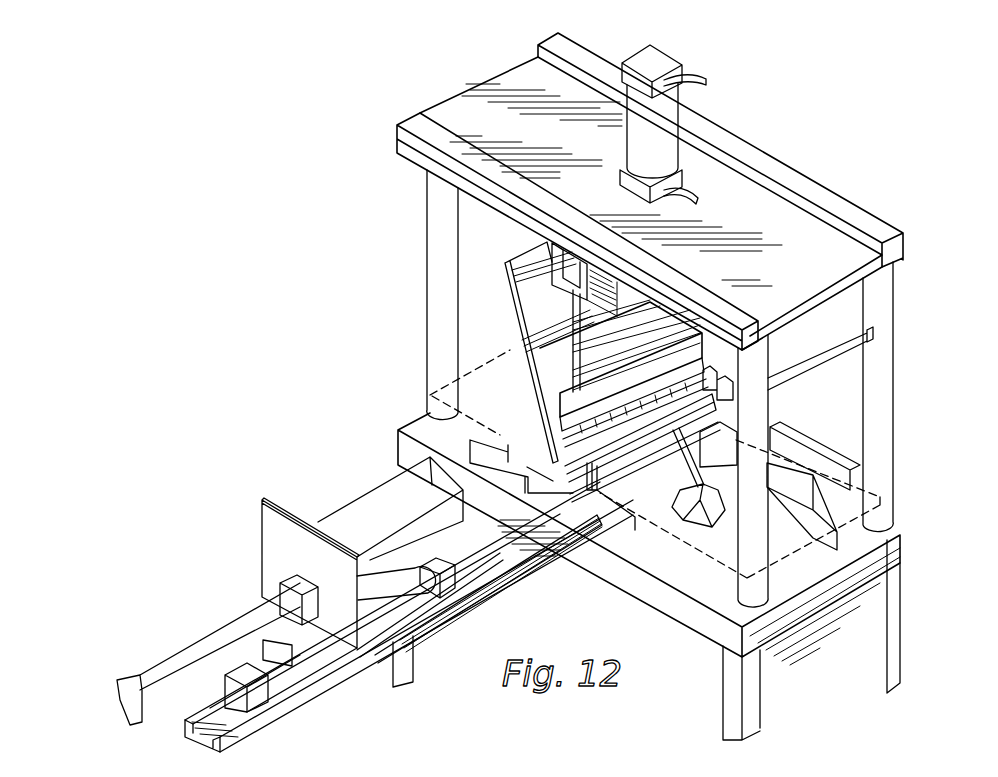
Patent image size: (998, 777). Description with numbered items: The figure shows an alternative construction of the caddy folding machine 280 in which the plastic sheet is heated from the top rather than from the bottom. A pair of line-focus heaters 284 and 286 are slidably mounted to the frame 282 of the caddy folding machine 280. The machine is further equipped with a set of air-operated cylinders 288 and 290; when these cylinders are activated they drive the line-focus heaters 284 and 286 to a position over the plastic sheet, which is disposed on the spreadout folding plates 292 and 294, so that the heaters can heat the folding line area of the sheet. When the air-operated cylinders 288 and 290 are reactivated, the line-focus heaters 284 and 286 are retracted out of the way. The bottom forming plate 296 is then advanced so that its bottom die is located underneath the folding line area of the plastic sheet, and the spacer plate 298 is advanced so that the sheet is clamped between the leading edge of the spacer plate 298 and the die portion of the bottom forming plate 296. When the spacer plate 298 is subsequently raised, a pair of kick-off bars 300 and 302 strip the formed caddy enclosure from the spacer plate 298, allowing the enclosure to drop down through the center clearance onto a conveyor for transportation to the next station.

The caddy folding machine 280 is at (840, 691).
The frame 282 is at (875, 575).
The line-focus heater 284 is at (387, 487).
The line-focus heater 286 is at (452, 543).
The air-operated cylinder 288 is at (226, 636).
The air-operated cylinder 290 is at (300, 665).
The spreadout folding plate 292 is at (460, 313).
The spreadout folding plate 294 is at (780, 388).
The bottom forming plate 296 is at (742, 437).
The spacer plate 298 is at (534, 362).
The kick-off bar 300 is at (546, 254).
The kick-off bar 302 is at (582, 304).